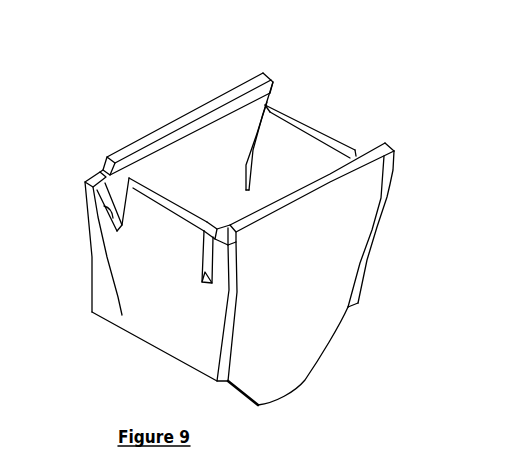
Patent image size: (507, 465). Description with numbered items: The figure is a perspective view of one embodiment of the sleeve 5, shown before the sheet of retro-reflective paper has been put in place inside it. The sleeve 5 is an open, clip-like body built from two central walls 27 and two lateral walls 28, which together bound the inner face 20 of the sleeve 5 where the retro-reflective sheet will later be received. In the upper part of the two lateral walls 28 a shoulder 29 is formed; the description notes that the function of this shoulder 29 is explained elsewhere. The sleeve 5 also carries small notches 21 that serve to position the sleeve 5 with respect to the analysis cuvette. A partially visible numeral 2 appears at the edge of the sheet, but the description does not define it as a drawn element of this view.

The sleeve 5 is at (393, 123).
The inner face of the sleeve 20 is at (290, 103).
The small notches for positioning the sleeve 21 is at (122, 315).
The two central walls of the sleeve 27 is at (278, 165).
The two lateral walls of the sleeve 28 is at (293, 300).
The shoulder of the sleeve 29 is at (187, 143).
The frame 2 is at (501, 267).